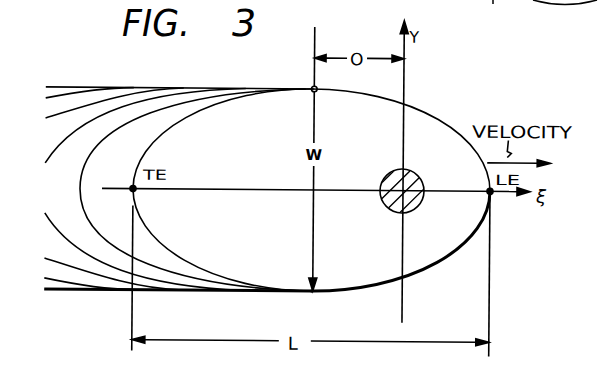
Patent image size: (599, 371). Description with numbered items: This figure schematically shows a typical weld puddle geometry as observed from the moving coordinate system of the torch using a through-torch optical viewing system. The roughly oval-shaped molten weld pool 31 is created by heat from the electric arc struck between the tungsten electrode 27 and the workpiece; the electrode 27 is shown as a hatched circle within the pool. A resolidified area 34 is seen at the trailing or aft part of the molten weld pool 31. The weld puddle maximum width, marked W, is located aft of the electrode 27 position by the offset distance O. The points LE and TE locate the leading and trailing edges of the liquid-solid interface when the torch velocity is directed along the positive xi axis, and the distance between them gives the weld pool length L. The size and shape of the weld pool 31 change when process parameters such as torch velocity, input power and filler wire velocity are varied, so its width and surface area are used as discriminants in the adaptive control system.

The tungsten electrode 27 is at (411, 173).
The molten weld puddle 31 is at (362, 277).
The resolidified area 34 is at (163, 279).